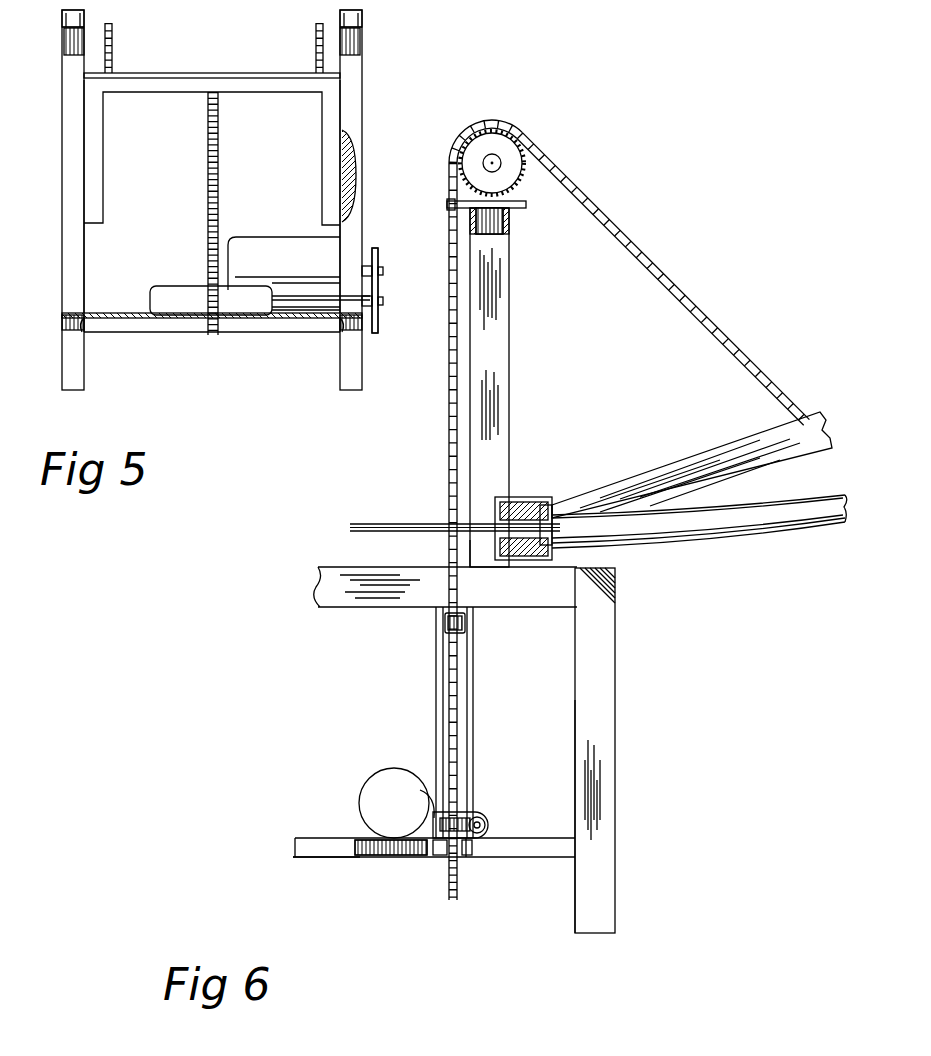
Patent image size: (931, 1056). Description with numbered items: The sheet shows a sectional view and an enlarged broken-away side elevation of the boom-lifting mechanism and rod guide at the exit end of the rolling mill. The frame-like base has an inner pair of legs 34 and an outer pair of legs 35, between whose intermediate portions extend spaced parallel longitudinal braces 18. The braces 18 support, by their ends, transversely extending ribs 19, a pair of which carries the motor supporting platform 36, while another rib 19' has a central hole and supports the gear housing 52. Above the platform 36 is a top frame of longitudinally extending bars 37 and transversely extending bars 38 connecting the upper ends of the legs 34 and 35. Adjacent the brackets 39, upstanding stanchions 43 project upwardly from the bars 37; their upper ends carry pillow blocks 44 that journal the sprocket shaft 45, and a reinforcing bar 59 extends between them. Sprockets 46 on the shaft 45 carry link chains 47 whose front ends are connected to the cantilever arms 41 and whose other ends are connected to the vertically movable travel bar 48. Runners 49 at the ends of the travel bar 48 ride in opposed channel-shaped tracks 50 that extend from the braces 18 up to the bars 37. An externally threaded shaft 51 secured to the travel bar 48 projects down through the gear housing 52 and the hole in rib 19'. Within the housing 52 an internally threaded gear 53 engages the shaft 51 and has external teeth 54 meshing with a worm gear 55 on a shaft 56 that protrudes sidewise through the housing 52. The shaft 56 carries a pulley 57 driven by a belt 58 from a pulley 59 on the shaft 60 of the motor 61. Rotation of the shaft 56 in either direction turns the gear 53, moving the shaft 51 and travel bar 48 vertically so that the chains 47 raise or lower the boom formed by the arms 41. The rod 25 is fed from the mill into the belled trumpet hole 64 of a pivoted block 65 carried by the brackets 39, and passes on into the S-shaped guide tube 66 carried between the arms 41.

In FIG. 5, the longitudinal braces 18 is at (62, 328).
In FIG. 6, the longitudinal braces 18 is at (320, 858).
In FIG. 5, the transversely extending ribs 19 is at (212, 339).
In FIG. 6, the transversely extending ribs 19 is at (391, 863).
In FIG. 6, the rib 19' is at (443, 865).
In FIG. 6, the rod 25 is at (480, 570).
In FIG. 5, the inner pair of legs 34 is at (84, 357).
In FIG. 6, the outer pair of legs 35 is at (615, 687).
In FIG. 5, the motor supporting platform 36 is at (128, 296).
In FIG. 6, the motor supporting platform 36 is at (350, 836).
In FIG. 5, the longitudinally extending bars 37 is at (62, 40).
In FIG. 6, the longitudinally extending bars 37 is at (369, 610).
In FIG. 6, the transversely extending bars 38 is at (614, 588).
In FIG. 6, the brackets 39 is at (497, 489).
In FIG. 6, the arms 41 is at (711, 456).
In FIG. 5, the upstanding stanchions 43 is at (84, 16).
In FIG. 6, the upstanding stanchions 43 is at (509, 359).
In FIG. 6, the pillow blocks 44 is at (523, 204).
In FIG. 6, the sprocket shaft 45 is at (486, 162).
In FIG. 6, the sprockets 46 is at (514, 146).
In FIG. 5, the link chains 47 is at (112, 55).
In FIG. 6, the link chains 47 is at (660, 236).
In FIG. 5, the travel bar 48 is at (171, 74).
In FIG. 6, the travel bar 48 is at (472, 628).
In FIG. 5, the runners 49 is at (104, 152).
In FIG. 6, the runners 49 is at (460, 689).
In FIG. 5, the tracks 50 is at (360, 107).
In FIG. 6, the tracks 50 is at (467, 714).
In FIG. 5, the externally threaded shaft 51 is at (218, 152).
In FIG. 6, the externally threaded shaft 51 is at (459, 892).
In FIG. 5, the gear housing 52 is at (188, 268).
In FIG. 6, the gear housing 52 is at (495, 824).
In FIG. 6, the internally threaded gear 53 is at (483, 814).
In FIG. 6, the external teeth 54 is at (422, 817).
In FIG. 6, the worm gear 55 is at (485, 823).
In FIG. 5, the shaft 56 is at (320, 299).
In FIG. 6, the shaft 56 is at (465, 860).
In FIG. 5, the pulley 57 is at (383, 299).
In FIG. 5, the belt 58 is at (383, 273).
In FIG. 5, the pulley 59 is at (379, 253).
In FIG. 6, the pulley 59 is at (507, 228).
In FIG. 5, the motor shaft 60 is at (366, 246).
In FIG. 5, the motor 61 is at (278, 214).
In FIG. 6, the motor 61 is at (372, 774).
In FIG. 6, the trumpet hole 64 is at (470, 570).
In FIG. 6, the pivoted block 65 is at (544, 500).
In FIG. 6, the S-shaped guide tube 66 is at (626, 500).